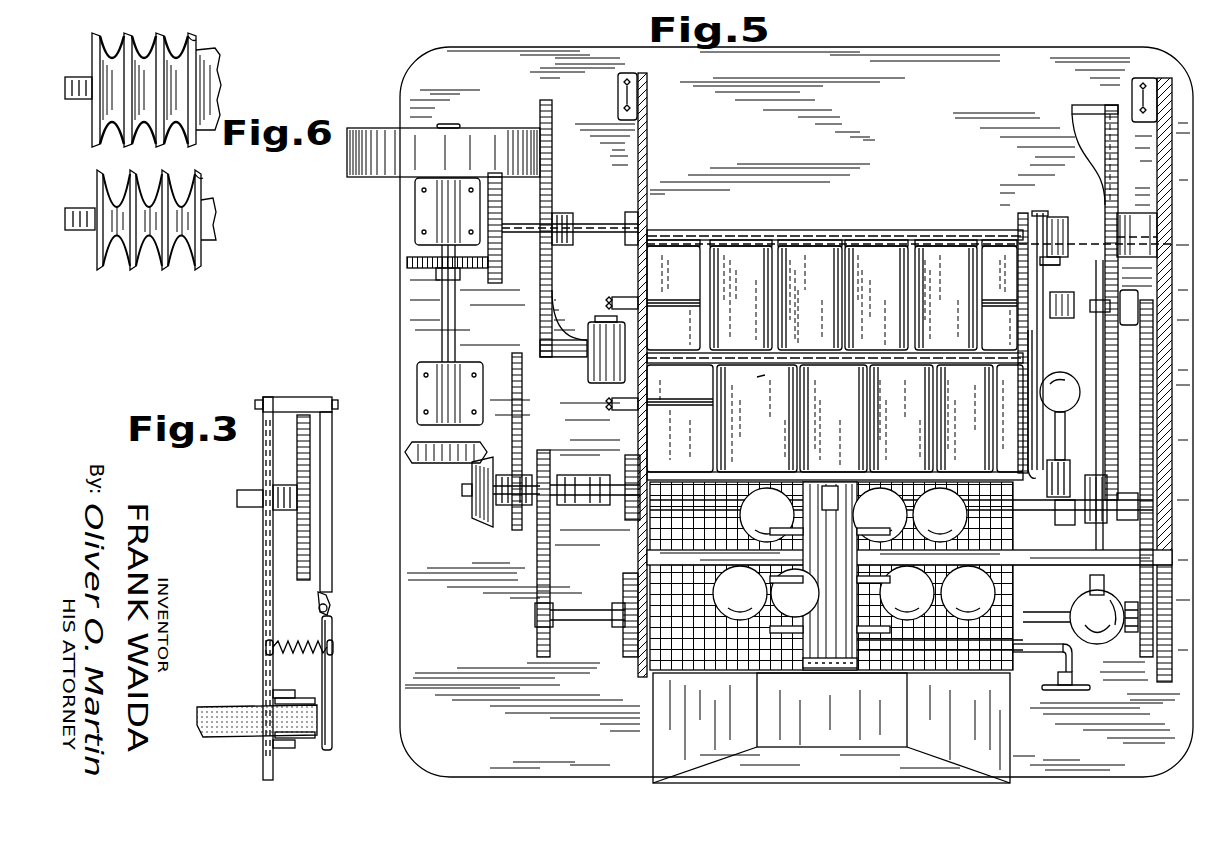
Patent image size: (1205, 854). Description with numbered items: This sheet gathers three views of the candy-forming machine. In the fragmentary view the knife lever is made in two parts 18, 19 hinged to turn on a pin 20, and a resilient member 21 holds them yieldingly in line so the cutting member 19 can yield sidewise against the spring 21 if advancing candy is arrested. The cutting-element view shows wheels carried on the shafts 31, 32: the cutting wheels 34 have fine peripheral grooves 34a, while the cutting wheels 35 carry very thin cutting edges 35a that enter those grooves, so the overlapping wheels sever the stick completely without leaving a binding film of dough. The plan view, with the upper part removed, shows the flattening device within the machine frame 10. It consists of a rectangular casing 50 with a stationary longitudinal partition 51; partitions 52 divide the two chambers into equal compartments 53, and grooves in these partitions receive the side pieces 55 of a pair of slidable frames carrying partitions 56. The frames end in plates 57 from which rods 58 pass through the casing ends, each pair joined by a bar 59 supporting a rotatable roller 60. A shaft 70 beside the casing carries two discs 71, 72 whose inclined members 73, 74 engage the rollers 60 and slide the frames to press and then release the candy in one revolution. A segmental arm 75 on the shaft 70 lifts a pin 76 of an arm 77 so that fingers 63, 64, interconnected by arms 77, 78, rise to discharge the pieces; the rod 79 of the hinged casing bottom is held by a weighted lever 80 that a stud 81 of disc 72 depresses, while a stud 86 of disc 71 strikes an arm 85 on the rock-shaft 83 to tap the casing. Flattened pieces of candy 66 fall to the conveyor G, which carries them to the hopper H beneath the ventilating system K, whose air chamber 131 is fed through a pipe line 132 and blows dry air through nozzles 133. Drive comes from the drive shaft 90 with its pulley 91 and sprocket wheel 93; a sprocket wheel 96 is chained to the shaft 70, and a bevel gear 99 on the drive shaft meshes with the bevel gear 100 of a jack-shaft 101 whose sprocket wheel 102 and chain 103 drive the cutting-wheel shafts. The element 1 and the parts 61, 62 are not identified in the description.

In FIG. 5, the tray 1 is at (767, 377).
In FIG. 5, the machine frame 10 is at (648, 150).
In FIG. 3, the knife lever part 18 is at (326, 545).
In FIG. 3, the cutting member 19 is at (328, 676).
In FIG. 3, the pin 20 is at (328, 610).
In FIG. 3, the resilient member 21 is at (303, 640).
In FIG. 6, the shaft 31 is at (70, 78).
In FIG. 6, the shaft 32 is at (74, 218).
In FIG. 6, the cutting wheels 34 is at (173, 90).
In FIG. 6, the peripheral grooves 34a is at (196, 38).
In FIG. 6, the cutting wheels 35 is at (172, 220).
In FIG. 6, the cutting edges 35a is at (200, 195).
In FIG. 5, the rectangular casing 50 is at (668, 238).
In FIG. 5, the stationary partition 51 is at (668, 352).
In FIG. 5, the partitions 52 is at (714, 312).
In FIG. 5, the compartments 53 is at (835, 359).
In FIG. 5, the side pieces 55 is at (818, 250).
In FIG. 5, the frame partitions 56 is at (768, 260).
In FIG. 5, the plates 57 is at (712, 440).
In FIG. 5, the rod 58 is at (680, 303).
In FIG. 5, the bar 59 is at (632, 412).
In FIG. 5, the rotatable roller 60 is at (590, 370).
In FIG. 5, the drive shaft 61 is at (640, 508).
In FIG. 5, the shaft 62 is at (882, 232).
In FIG. 5, the finger 63 is at (795, 455).
In FIG. 5, the fingers 64 is at (766, 282).
In FIG. 5, the piece of candy 66 is at (1070, 600).
In FIG. 5, the shaft 70 is at (583, 228).
In FIG. 5, the disc 71 is at (552, 110).
In FIG. 5, the disc 72 is at (1105, 200).
In FIG. 5, the inclined member 73 is at (562, 357).
In FIG. 5, the inclined member 74 is at (1083, 104).
In FIG. 5, the segmental arm 75 is at (1068, 245).
In FIG. 5, the pin 76 is at (1056, 265).
In FIG. 5, the arm 77 is at (1020, 280).
In FIG. 5, the arm 78 is at (1034, 440).
In FIG. 5, the rod 79 is at (1070, 292).
In FIG. 5, the weighted lever 80 is at (1097, 300).
In FIG. 5, the stud 81 is at (1098, 292).
In FIG. 5, the rock-shaft 83 is at (1084, 512).
In FIG. 5, the arm 85 is at (1138, 405).
In FIG. 5, the stud 86 is at (1142, 300).
In FIG. 5, the drive shaft 90 is at (456, 336).
In FIG. 5, the pulley 91 is at (386, 178).
In FIG. 5, the sprocket wheel 93 is at (410, 264).
In FIG. 5, the sprocket wheel 96 is at (495, 284).
In FIG. 5, the bevel gear 99 is at (420, 462).
In FIG. 5, the bevel gear 100 is at (482, 527).
In FIG. 5, the jack-shaft 101 is at (470, 495).
In FIG. 5, the sprocket wheel 102 is at (527, 508).
In FIG. 5, the chain 103 is at (522, 410).
In FIG. 5, the air chamber 131 is at (842, 630).
In FIG. 5, the pipe line 132 is at (1032, 665).
In FIG. 5, the nozzles 133 is at (853, 590).
In FIG. 5, the conveyor G is at (838, 554).
In FIG. 5, the ventilating system K is at (830, 576).
In FIG. 5, the hopper H is at (831, 728).